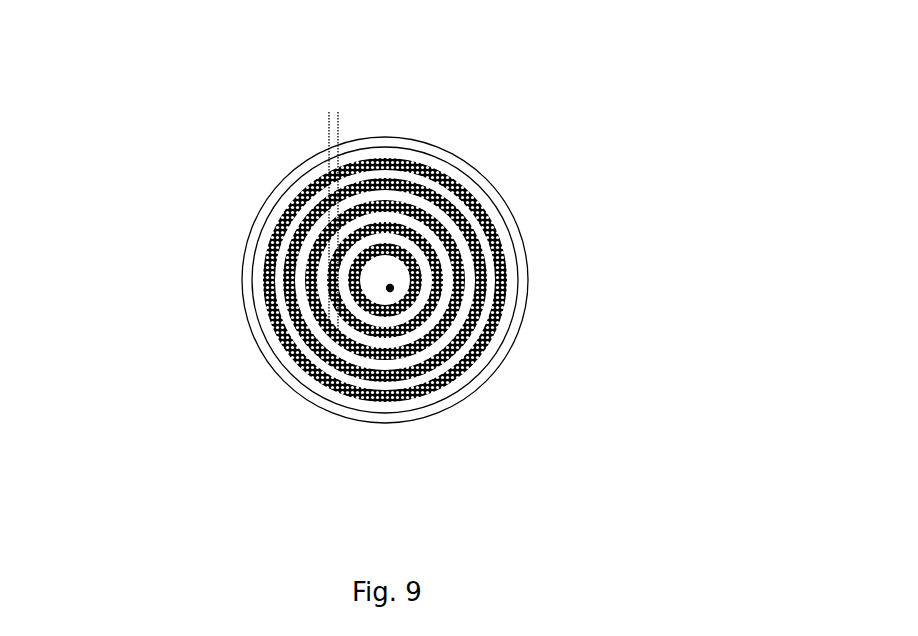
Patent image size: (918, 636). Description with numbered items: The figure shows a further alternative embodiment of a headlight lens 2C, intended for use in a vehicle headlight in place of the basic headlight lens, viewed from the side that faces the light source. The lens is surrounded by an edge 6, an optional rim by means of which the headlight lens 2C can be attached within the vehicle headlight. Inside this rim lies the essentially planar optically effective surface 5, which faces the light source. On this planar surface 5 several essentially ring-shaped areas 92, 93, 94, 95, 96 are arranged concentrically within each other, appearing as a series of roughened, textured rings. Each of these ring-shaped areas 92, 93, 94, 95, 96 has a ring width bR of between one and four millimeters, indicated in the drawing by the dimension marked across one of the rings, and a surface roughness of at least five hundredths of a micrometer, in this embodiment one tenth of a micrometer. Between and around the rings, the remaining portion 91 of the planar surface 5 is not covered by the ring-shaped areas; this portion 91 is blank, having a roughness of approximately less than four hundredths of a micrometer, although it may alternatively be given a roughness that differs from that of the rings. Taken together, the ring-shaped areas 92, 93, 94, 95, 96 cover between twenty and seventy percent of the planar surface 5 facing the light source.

The headlight lens 2C is at (572, 84).
The edge 6 is at (515, 243).
The essentially planar optically effective surface 5 is at (354, 271).
The portion of the essentially planar surface 91 is at (390, 288).
The essentially ring-shaped area 92 is at (262, 297).
The essentially ring-shaped area 93 is at (312, 347).
The essentially ring-shaped area 94 is at (413, 351).
The essentially ring-shaped area 95 is at (436, 270).
The essentially ring-shaped area 96 is at (398, 252).
The ring width bR is at (320, 121).